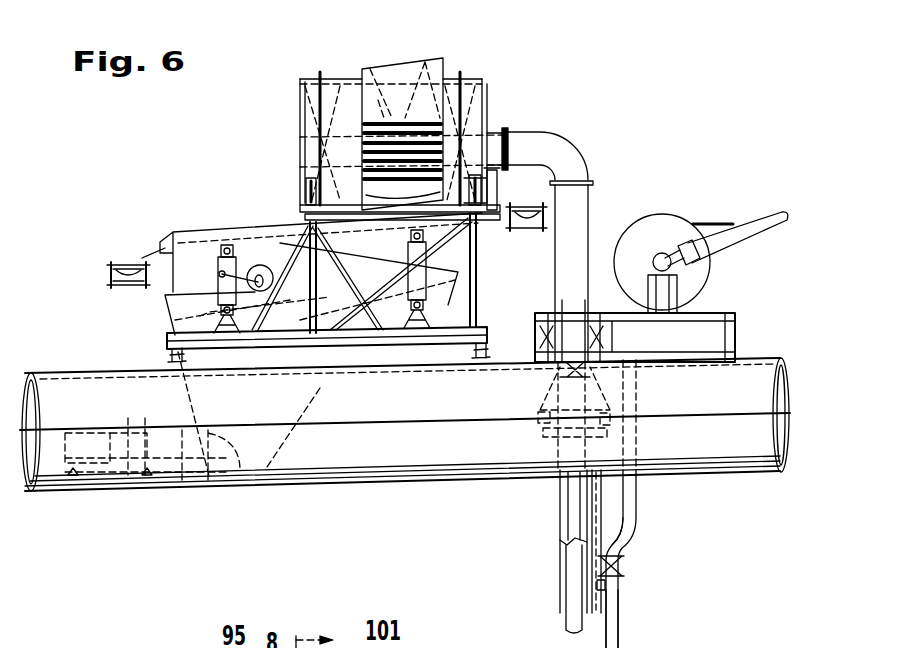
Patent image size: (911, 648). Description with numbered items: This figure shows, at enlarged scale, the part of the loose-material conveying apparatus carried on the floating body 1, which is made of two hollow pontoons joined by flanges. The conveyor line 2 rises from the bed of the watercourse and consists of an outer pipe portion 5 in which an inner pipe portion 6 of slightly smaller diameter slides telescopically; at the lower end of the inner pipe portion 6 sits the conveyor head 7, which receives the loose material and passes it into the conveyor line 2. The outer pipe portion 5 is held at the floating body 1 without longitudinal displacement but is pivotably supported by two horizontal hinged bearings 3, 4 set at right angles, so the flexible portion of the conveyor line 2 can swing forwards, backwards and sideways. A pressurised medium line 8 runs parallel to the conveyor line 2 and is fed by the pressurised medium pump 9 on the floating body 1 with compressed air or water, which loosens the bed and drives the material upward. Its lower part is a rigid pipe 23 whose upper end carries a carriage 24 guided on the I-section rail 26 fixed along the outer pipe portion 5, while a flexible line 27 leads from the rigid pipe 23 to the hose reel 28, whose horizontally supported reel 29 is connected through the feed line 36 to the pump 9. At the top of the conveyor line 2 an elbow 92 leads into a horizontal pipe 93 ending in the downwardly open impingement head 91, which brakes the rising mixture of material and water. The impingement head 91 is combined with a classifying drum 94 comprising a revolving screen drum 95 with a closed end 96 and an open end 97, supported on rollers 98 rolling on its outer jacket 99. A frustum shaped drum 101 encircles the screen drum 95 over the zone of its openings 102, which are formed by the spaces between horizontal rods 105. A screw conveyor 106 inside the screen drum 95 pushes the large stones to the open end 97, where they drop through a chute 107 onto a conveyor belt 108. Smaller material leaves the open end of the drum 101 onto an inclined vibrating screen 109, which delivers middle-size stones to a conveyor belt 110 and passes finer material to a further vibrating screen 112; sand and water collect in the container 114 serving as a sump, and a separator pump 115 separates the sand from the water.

The floating body 1 is at (363, 460).
The conveyor line 2 is at (547, 571).
The hinged bearing 3 is at (558, 368).
The hinged bearing 4 is at (533, 430).
The outer pipe portion 5 is at (562, 523).
The inner pipe portion 6 is at (578, 622).
The conveyor head 7 is at (457, 7).
The pressurised medium line 8 is at (643, 523).
The pressurised medium pump 9 is at (627, 195).
The rigid pipe 23 is at (620, 626).
The carriage 24 is at (622, 586).
The rail 26 is at (601, 495).
The flexible line 27 is at (630, 532).
The hose reel 28 is at (689, 217).
The reel 29 is at (642, 228).
The feed line 36 is at (752, 232).
The impingement head 91 is at (300, 137).
The elbow 92 is at (560, 139).
The horizontal pipe 93 is at (492, 132).
The classifying drum 94 is at (354, 64).
The screen drum 95 is at (336, 80).
The closed end 96 is at (300, 113).
The open end 97 is at (484, 92).
The rollers 98 is at (302, 178).
The outer jacket 99 is at (316, 73).
The frustum shaped drum 101 is at (411, 62).
The openings 102 is at (378, 224).
The horizontal rods 105 is at (436, 226).
The screw conveyor 106 is at (378, 100).
The chute 107 is at (500, 205).
The conveyor belt 108 is at (528, 237).
The inclined vibrating screen 109 is at (255, 230).
The conveyor belt 110 is at (128, 262).
The vibrating screen 112 is at (200, 316).
The container 114 is at (326, 374).
The separator pump 115 is at (120, 416).